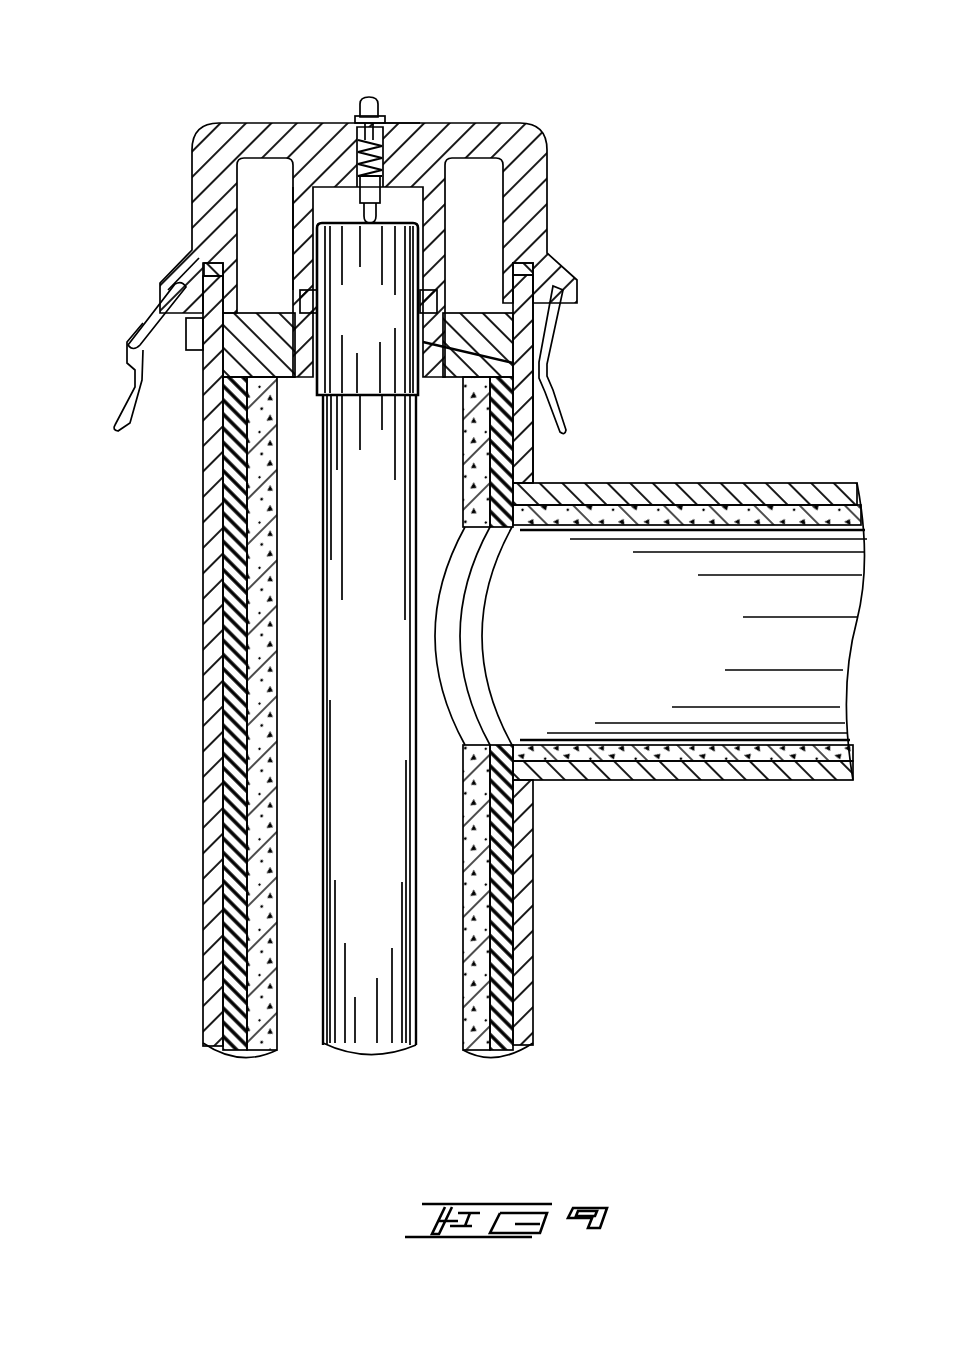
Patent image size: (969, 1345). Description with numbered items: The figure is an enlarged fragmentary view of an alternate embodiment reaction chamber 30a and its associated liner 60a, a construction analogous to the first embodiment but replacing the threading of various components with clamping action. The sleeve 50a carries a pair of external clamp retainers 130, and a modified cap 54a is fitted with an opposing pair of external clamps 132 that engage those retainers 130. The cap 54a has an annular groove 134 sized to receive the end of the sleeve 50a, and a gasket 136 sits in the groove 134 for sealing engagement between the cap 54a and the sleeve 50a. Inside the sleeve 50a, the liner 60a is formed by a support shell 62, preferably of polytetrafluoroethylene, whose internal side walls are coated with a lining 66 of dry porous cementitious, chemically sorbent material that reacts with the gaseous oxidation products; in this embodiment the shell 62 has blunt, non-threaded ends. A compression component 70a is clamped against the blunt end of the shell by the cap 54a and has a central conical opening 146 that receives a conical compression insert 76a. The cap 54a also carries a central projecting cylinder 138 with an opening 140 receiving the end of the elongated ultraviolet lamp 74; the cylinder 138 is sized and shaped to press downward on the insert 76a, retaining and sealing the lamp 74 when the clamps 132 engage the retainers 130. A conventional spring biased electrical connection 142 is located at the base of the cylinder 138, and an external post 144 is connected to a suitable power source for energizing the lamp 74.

The reaction chamber 30a is at (113, 248).
The sleeve 50a is at (203, 665).
The cap 54a is at (509, 89).
The liner 60a is at (205, 503).
The support shell 62 is at (227, 728).
The lining 66 is at (267, 565).
The compression component 70a is at (491, 322).
The ultraviolet lamp 74 is at (404, 463).
The conical compression insert 76a is at (237, 398).
The clamp retainers 130 is at (187, 327).
The clamps 132 is at (128, 357).
The annular groove 134 is at (220, 272).
The gasket 136 is at (210, 265).
The central projecting cylinder 138 is at (300, 207).
The opening 140 is at (400, 207).
The spring biased electrical connection 142 is at (386, 122).
The external post 144 is at (370, 96).
The central conical opening 146 is at (450, 345).